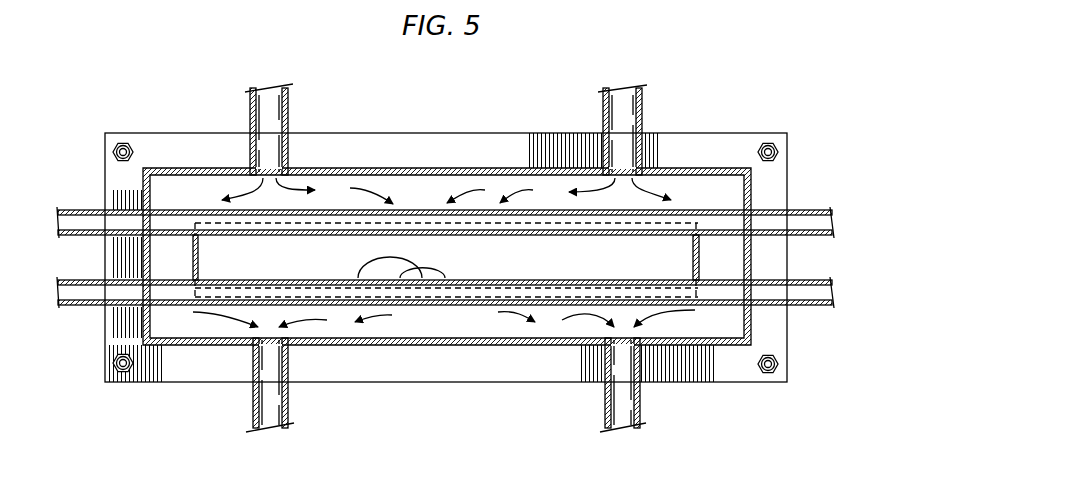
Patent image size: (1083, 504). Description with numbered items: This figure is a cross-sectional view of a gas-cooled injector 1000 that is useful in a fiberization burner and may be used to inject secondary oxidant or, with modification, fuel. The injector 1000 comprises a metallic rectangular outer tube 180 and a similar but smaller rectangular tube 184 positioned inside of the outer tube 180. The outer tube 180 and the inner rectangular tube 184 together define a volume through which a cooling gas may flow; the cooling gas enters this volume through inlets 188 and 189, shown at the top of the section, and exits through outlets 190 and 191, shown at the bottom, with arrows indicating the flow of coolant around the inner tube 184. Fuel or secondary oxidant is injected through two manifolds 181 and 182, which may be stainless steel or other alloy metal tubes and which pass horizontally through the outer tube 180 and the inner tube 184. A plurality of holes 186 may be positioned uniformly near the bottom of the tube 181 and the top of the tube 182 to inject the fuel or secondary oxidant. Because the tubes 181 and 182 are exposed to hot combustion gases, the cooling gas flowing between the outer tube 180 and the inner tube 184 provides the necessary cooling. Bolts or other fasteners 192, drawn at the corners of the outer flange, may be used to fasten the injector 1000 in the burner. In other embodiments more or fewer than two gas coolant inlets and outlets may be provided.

The injector 1000 is at (753, 97).
The metallic rectangular outer tube 180 is at (418, 168).
The manifold 181 is at (80, 208).
The manifold 182 is at (80, 306).
The inner rectangular tube 184 is at (467, 293).
The holes 186 is at (420, 278).
The inlet 188 is at (642, 146).
The inlet 189 is at (250, 141).
The outlet 190 is at (641, 370).
The outlet 191 is at (252, 364).
The bolts or other fasteners 192 is at (120, 380).